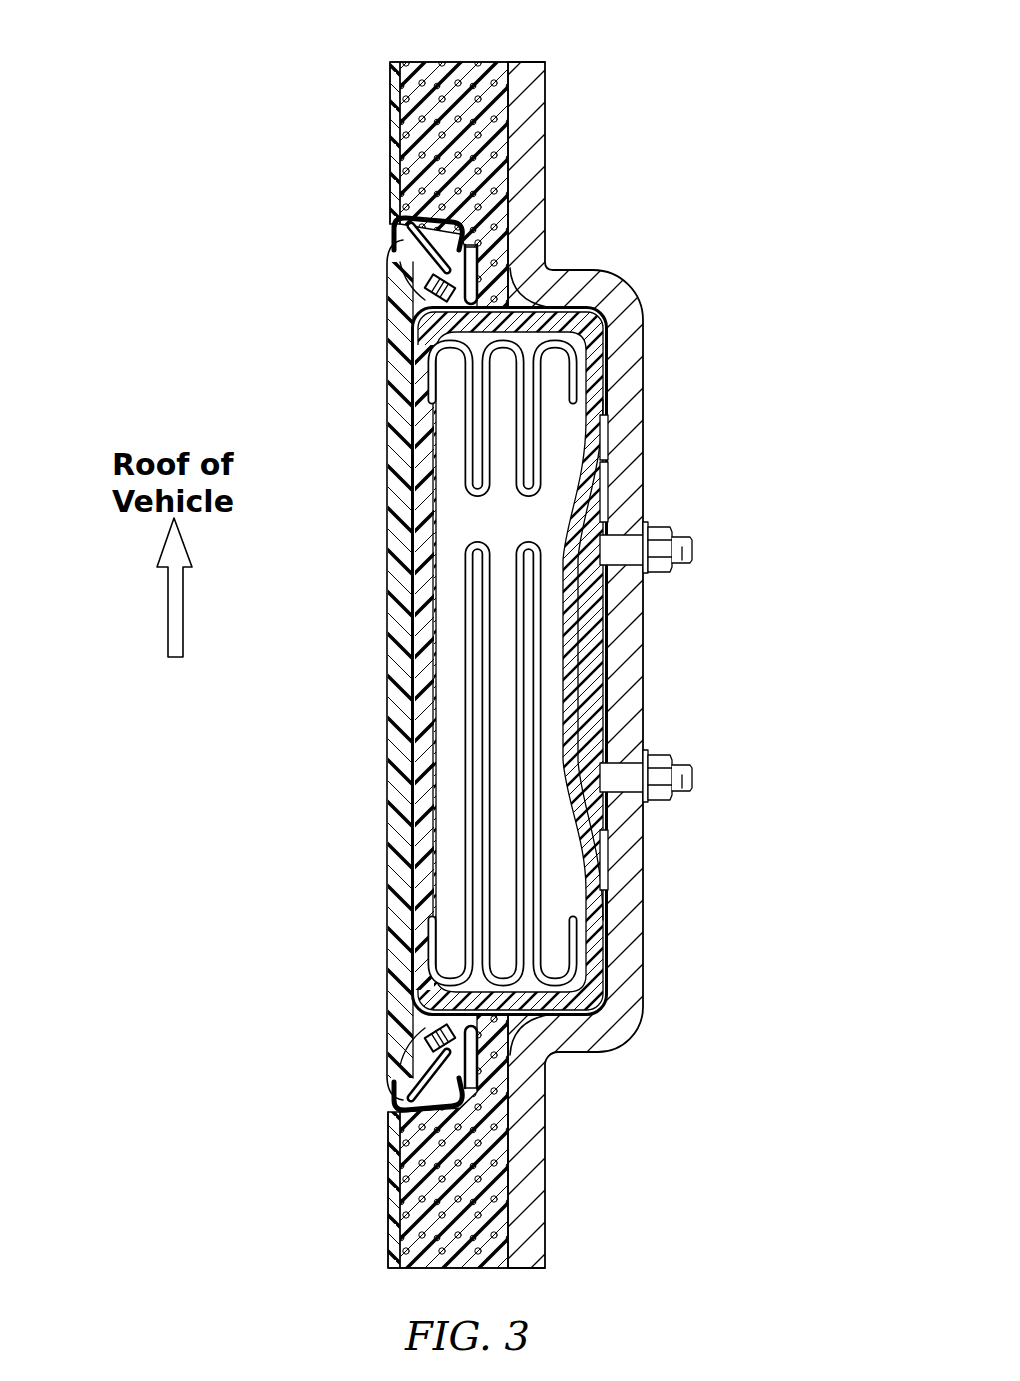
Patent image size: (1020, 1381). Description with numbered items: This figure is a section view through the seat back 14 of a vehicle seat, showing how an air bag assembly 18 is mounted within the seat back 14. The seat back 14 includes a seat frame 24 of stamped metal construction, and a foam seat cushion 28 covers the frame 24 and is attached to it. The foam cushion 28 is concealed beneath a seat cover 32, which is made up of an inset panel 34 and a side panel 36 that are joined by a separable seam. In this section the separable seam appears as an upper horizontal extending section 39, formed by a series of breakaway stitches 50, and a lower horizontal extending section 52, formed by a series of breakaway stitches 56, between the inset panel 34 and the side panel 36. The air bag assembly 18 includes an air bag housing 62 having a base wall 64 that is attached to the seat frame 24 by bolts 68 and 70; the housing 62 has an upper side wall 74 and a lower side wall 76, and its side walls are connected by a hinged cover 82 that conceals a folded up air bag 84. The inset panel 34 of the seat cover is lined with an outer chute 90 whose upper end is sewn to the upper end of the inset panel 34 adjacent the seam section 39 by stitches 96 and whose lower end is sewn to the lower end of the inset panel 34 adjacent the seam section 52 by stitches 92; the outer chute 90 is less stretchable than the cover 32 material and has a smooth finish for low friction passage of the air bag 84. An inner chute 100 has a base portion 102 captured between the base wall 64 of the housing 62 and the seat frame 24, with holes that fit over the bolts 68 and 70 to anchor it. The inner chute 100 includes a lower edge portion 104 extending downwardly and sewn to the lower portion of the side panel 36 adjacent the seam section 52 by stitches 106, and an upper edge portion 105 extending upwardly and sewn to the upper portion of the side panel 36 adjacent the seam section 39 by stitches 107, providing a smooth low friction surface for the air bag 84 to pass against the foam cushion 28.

The seat back 14 is at (460, 93).
The air bag assembly 18 is at (557, 932).
The seat frame 24 is at (633, 365).
The foam seat cushion 28 is at (483, 145).
The seat cover 32 is at (398, 400).
The inset panel 34 is at (398, 822).
The side panel 36 is at (397, 129).
The upper horizontal extending section 39 is at (405, 228).
The breakaway stitches 50 is at (394, 237).
The lower horizontal extending section 52 is at (397, 1090).
The breakaway stitches 56 is at (408, 1110).
The air bag housing 62 is at (600, 645).
The base wall 64 is at (600, 713).
The bolt 68 is at (690, 552).
The bolt 70 is at (690, 779).
The upper side wall 74 is at (548, 300).
The lower side wall 76 is at (551, 1007).
The hinged cover 82 is at (420, 940).
The air bag 84 is at (595, 966).
The outer chute 90 is at (403, 620).
The stitches 92 is at (422, 1040).
The stitches 96 is at (420, 290).
The inner chute 100 is at (608, 480).
The base portion 102 is at (604, 446).
The lower edge portion 104 is at (513, 1043).
The upper edge portion 105 is at (566, 325).
The stitches 106 is at (462, 1086).
The stitches 107 is at (478, 268).